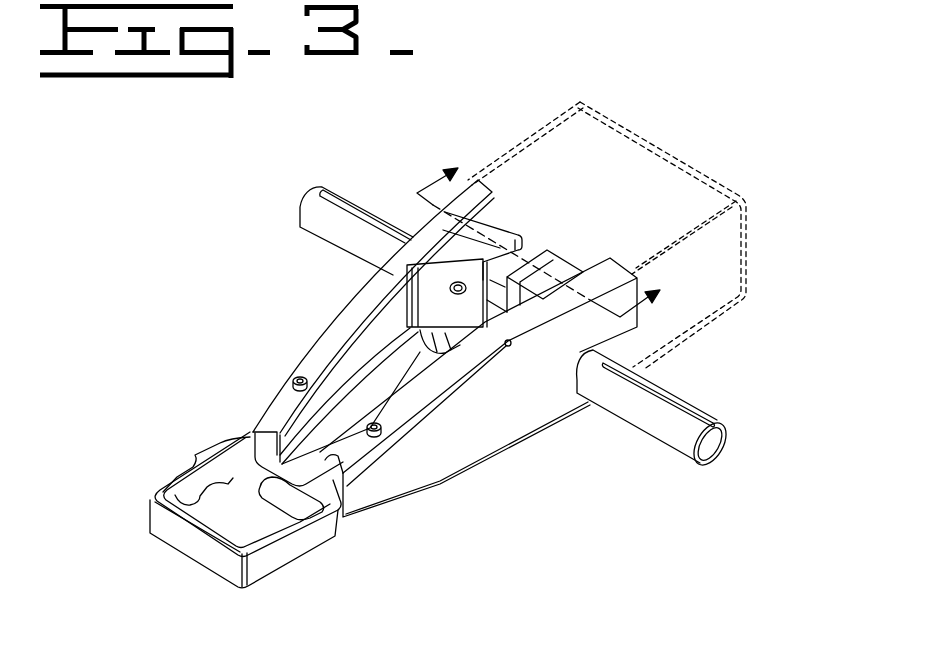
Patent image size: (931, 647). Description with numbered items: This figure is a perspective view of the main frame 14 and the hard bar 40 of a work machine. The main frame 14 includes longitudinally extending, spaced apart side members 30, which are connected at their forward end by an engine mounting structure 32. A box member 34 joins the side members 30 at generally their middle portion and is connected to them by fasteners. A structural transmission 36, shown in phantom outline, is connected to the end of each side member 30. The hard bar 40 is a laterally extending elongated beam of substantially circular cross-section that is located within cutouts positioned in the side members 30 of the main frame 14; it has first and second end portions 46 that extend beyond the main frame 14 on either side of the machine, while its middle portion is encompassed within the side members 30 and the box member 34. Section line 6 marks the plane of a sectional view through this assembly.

The main frame 14 is at (264, 394).
The side members 30 is at (330, 326).
The engine mounting structure 32 is at (290, 561).
The box member 34 is at (568, 262).
The structural transmission 36 is at (537, 135).
The hard bar 40 is at (722, 404).
The first and second end portions 46 is at (344, 197).
The section line 6- 6 is at (530, 250).